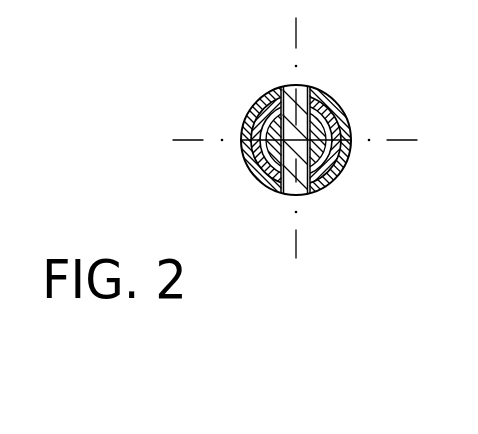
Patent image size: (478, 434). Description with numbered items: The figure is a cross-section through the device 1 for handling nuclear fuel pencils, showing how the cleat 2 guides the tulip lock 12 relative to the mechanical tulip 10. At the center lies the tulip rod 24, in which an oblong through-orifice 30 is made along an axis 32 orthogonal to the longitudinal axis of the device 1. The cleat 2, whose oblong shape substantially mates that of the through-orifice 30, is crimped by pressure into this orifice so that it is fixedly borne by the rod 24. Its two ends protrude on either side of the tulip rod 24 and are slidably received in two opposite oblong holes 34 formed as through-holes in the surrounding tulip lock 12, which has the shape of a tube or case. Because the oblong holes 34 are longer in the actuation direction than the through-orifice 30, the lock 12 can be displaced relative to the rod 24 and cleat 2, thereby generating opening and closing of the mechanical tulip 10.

The device 1 is at (212, 77).
The cleat 2 is at (301, 86).
The mechanical tulip 10 is at (261, 155).
The tulip lock 12 is at (345, 118).
The tulip rod 24 is at (344, 162).
The through-orifice 30 is at (312, 189).
The axis 32 is at (295, 248).
The oblong holes 34 is at (291, 86).